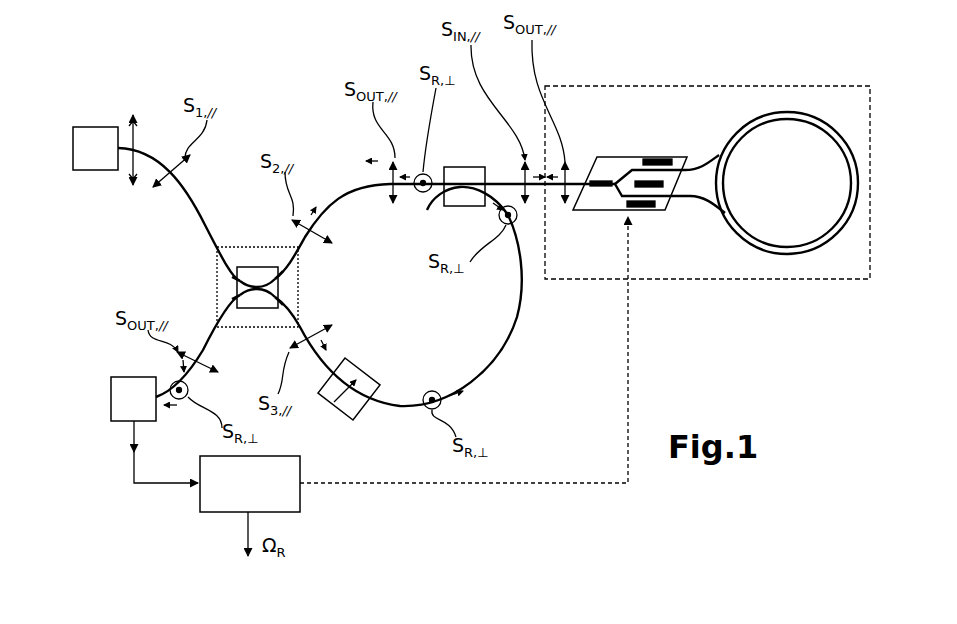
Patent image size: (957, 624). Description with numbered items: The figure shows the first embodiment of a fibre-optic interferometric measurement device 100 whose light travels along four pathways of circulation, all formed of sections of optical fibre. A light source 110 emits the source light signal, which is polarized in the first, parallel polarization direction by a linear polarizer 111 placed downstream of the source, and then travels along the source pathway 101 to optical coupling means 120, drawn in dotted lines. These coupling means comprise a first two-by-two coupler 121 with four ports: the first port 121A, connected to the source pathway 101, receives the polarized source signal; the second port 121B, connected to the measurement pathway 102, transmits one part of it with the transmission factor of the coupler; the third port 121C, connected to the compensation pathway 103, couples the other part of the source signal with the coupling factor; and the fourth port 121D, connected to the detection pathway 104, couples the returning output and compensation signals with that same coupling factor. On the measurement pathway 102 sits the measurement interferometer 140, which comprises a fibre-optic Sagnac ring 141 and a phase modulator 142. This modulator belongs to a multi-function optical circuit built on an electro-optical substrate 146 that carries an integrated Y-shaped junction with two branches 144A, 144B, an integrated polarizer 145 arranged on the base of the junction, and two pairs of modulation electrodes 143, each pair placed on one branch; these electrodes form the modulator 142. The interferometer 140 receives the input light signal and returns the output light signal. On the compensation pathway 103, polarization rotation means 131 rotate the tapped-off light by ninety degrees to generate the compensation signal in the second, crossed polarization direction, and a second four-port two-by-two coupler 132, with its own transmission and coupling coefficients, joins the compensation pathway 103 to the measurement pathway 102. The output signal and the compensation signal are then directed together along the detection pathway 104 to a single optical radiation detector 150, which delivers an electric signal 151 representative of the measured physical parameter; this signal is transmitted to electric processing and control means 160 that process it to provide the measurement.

The interferometric measurement device 100 is at (594, 518).
The source pathway 101 is at (197, 211).
The measurement pathway 102 is at (358, 186).
The compensation pathway 103 is at (500, 355).
The detection pathway 104 is at (216, 333).
The light source 110 is at (97, 125).
The linear polarizer 111 is at (136, 112).
The optical coupling means 120 is at (303, 287).
The first two-by-two coupler 121 is at (257, 266).
The first port 121A is at (237, 282).
The second port 121B is at (280, 283).
The third port 121C is at (280, 295).
The fourth port 121D is at (237, 293).
The polarization rotation means 131 is at (363, 420).
The second two-by-two coupler 132 is at (462, 166).
The measurement interferometer 140 is at (795, 283).
The fibre-optic Sagnac ring 141 is at (787, 111).
The phase modulator 142 is at (677, 158).
The modulation electrodes 143 is at (680, 170).
The first branch of the Y-junction 144A is at (630, 170).
The second branch of the Y-junction 144B is at (632, 208).
The integrated polarizer 145 is at (600, 190).
The electro-optical substrate 146 is at (610, 155).
The optical radiation detector 150 is at (133, 376).
The electric signal 151 is at (130, 452).
The electric processing and control means 160 is at (222, 513).